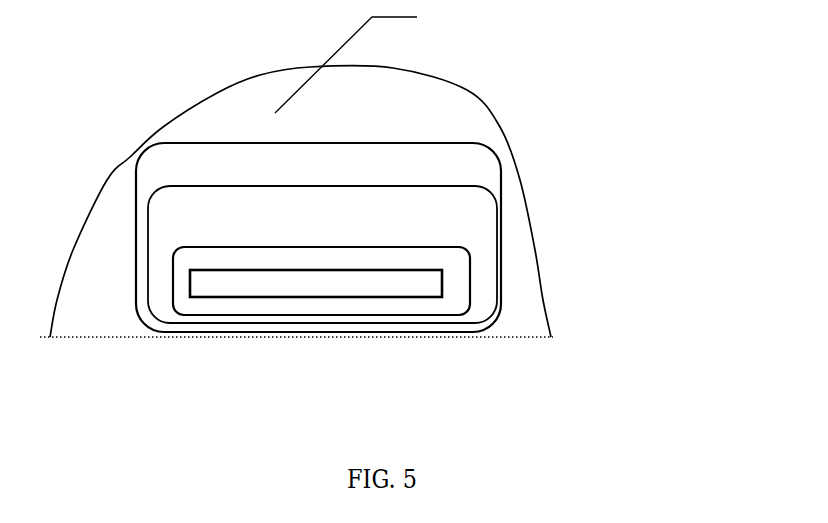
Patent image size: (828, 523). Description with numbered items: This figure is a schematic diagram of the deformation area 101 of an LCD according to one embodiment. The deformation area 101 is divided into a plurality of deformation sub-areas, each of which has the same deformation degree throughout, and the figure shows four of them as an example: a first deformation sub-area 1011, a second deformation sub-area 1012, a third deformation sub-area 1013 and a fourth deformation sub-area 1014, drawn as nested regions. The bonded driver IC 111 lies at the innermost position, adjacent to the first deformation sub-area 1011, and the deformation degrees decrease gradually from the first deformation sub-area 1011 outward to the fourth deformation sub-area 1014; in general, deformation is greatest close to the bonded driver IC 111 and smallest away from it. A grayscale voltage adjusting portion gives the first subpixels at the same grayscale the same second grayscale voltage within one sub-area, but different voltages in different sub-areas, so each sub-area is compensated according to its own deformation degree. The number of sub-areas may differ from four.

The deformation area 101 is at (205, 35).
The fourth deformation sub-area 1014 is at (407, 61).
The third deformation sub-area 1013 is at (403, 160).
The second deformation sub-area 1012 is at (452, 223).
The first deformation sub-area 1011 is at (207, 302).
The bonded driver IC 111 is at (325, 282).